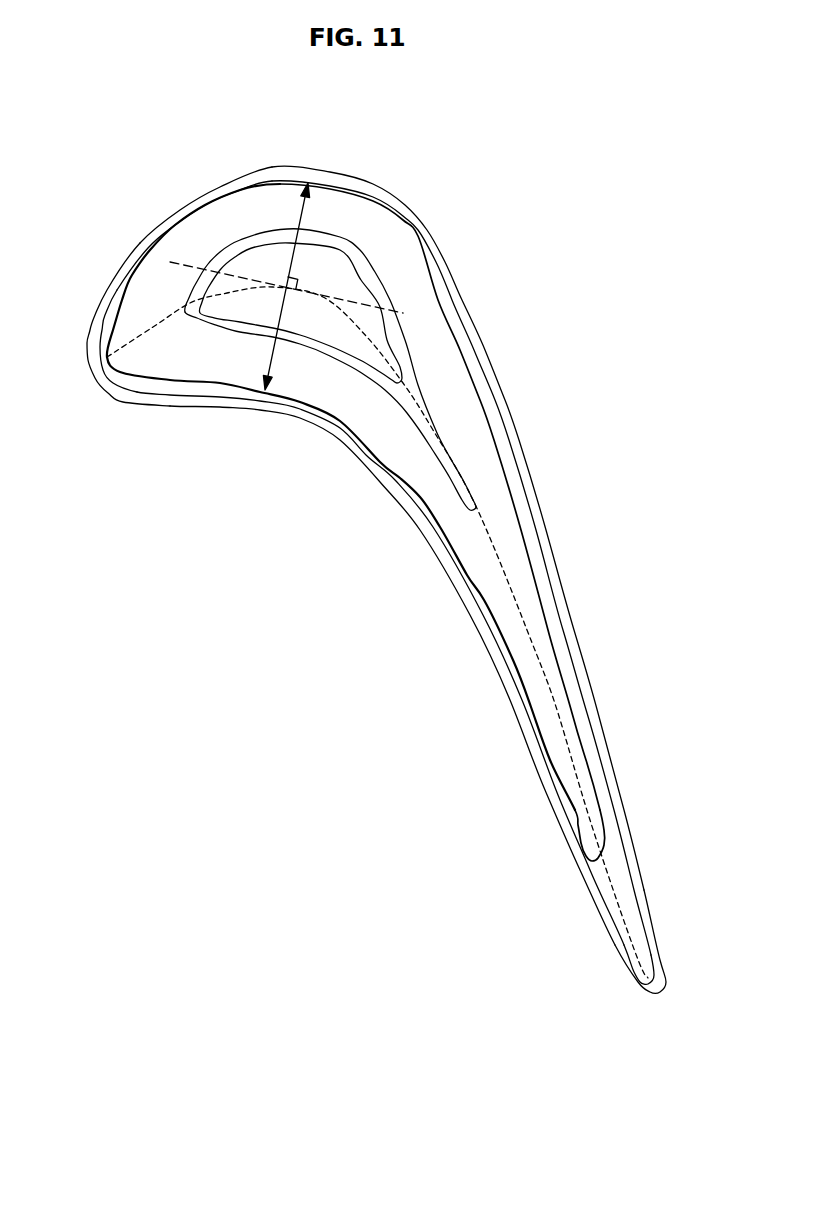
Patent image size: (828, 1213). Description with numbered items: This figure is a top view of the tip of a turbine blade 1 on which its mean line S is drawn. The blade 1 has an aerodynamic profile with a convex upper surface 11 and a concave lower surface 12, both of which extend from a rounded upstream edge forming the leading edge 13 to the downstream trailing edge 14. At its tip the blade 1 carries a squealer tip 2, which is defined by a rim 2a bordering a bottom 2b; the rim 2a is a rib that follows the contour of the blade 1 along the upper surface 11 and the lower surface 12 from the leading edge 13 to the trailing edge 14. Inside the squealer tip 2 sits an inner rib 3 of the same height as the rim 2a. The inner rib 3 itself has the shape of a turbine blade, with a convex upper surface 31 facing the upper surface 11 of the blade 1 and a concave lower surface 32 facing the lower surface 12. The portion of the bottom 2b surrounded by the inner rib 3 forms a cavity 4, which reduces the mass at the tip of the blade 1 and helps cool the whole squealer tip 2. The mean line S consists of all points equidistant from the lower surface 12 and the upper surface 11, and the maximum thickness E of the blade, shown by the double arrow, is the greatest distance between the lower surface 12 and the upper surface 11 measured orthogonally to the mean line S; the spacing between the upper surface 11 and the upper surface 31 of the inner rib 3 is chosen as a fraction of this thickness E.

The blade 1 is at (545, 351).
The squealer tip 2 is at (377, 581).
The rim 2a is at (544, 752).
The bottom 2b is at (560, 714).
The inner rib 3 is at (314, 325).
The cavity 4 is at (262, 265).
The upper surface 11 is at (435, 282).
The lower surface 12 is at (409, 533).
The leading edge 13 is at (95, 365).
The trailing edge 14 is at (646, 973).
The upper surface of the inner rib 31 is at (328, 243).
The lower surface of the inner rib 32 is at (318, 355).
The mean line S is at (141, 340).
The maximum thickness E is at (275, 312).